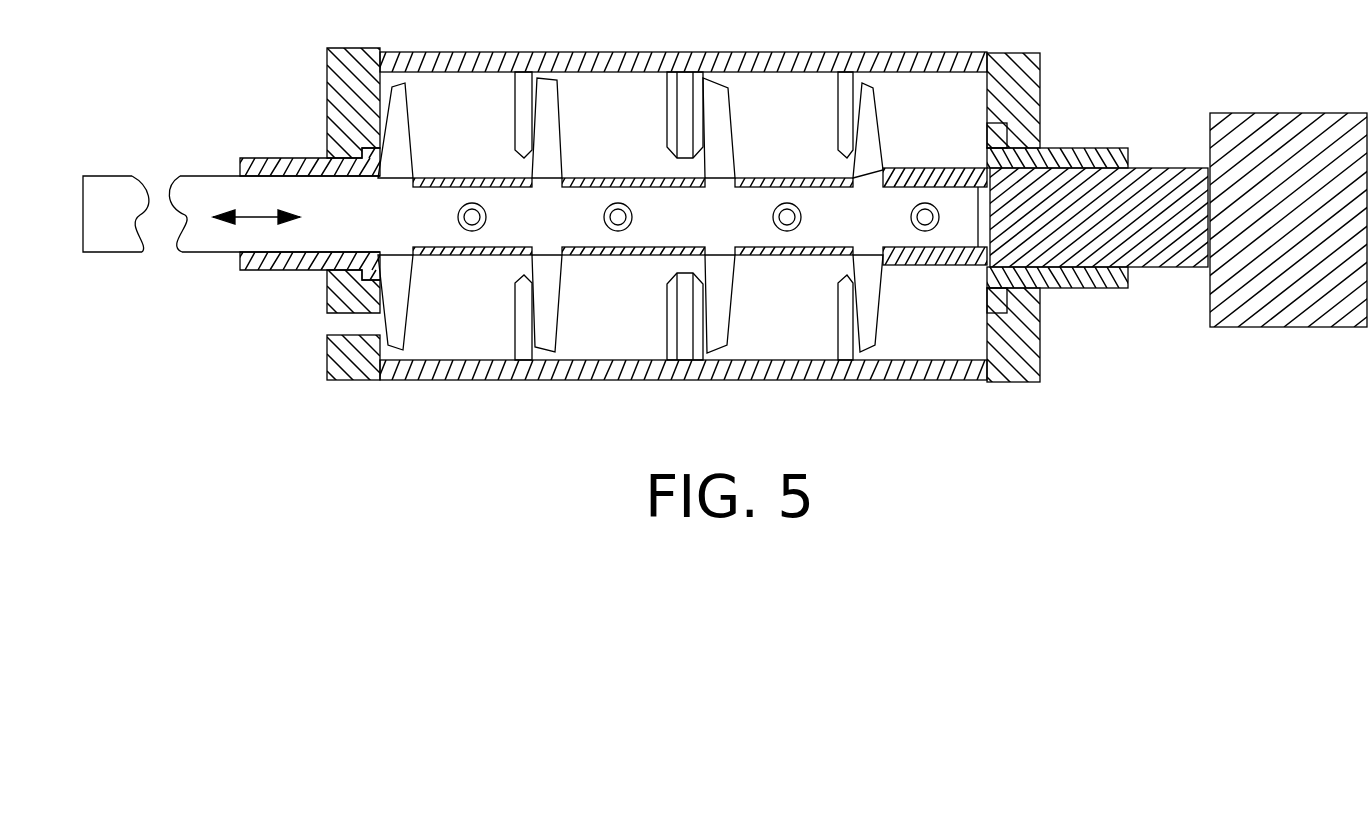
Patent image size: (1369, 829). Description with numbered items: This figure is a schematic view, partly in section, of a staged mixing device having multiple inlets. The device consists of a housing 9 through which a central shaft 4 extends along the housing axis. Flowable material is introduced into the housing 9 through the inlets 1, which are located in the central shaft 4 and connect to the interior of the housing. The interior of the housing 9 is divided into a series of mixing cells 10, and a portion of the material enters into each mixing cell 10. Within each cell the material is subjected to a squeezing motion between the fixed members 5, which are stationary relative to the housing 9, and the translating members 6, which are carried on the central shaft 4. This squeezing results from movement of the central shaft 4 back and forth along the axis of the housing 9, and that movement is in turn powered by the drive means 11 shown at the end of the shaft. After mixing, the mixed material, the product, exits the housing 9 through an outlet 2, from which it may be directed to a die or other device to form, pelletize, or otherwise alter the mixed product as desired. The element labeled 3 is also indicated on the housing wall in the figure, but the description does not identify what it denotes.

The inlets 1 is at (470, 212).
The outlet 2 is at (326, 325).
The housing end wall 3 is at (962, 73).
The central shaft 4 is at (194, 174).
The fixed members 5 is at (515, 108).
The translating members 6 is at (408, 292).
The housing 9 is at (905, 52).
The mixing cell 10 is at (642, 337).
The drive means 11 is at (1268, 112).